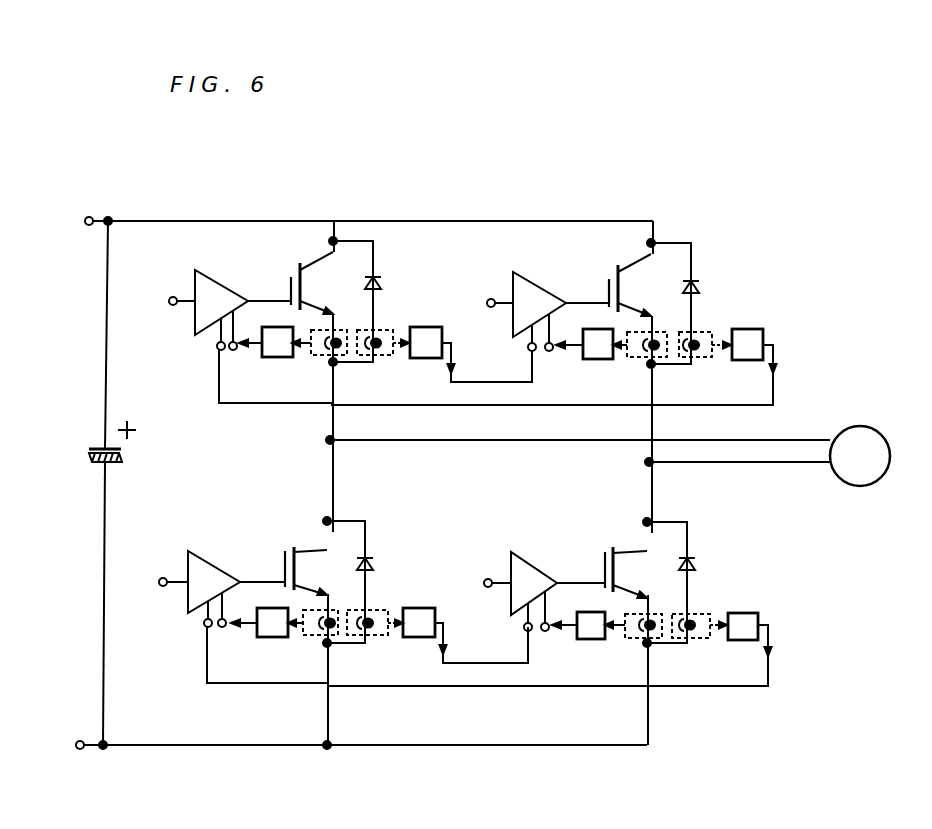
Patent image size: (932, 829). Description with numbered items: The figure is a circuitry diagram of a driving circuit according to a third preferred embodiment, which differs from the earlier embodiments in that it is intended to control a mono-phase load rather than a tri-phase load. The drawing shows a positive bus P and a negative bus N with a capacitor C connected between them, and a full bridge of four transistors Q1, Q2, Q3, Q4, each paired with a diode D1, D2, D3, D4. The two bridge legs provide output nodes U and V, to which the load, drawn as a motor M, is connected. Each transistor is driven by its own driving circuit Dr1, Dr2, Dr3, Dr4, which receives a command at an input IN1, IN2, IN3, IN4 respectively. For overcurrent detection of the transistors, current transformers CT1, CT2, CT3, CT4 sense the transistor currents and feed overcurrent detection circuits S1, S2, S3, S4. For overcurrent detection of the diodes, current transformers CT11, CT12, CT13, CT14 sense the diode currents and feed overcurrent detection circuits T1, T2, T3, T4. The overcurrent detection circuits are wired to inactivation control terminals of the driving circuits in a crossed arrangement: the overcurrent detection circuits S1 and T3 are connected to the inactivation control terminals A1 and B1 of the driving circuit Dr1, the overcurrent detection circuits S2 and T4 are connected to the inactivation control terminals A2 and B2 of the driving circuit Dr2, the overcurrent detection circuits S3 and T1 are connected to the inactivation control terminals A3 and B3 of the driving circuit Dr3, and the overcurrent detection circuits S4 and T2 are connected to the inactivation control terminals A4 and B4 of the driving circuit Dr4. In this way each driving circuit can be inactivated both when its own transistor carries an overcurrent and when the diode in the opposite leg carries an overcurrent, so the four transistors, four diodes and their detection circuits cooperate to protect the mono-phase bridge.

The positive DC bus terminal P is at (83, 224).
The negative DC bus terminal N is at (77, 746).
The DC link capacitor C is at (95, 467).
The output terminal U is at (578, 453).
The output terminal V is at (737, 475).
The motor M is at (872, 471).
The input terminal 1 IN1 is at (161, 301).
The input terminal 2 IN2 is at (153, 582).
The input terminal 3 IN3 is at (480, 302).
The input terminal 4 IN4 is at (478, 583).
The driving circuit Dr1 is at (221, 302).
The driving circuit Dr2 is at (214, 582).
The driving circuit Dr3 is at (539, 304).
The driving circuit Dr4 is at (534, 583).
The transistor Q1 is at (290, 276).
The transistor Q2 is at (283, 555).
The transistor Q3 is at (608, 280).
The transistor Q4 is at (602, 550).
The diode D1 is at (399, 265).
The diode D2 is at (390, 547).
The diode D3 is at (715, 273).
The diode D4 is at (712, 549).
The overcurrent detection circuit T1 is at (470, 331).
The overcurrent detection circuit T2 is at (461, 610).
The overcurrent detection circuit T3 is at (554, 347).
The overcurrent detection circuit T4 is at (554, 627).
The overcurrent detection circuit S1 is at (266, 382).
The overcurrent detection circuit S2 is at (259, 674).
The overcurrent detection circuit S3 is at (584, 383).
The overcurrent detection circuit S4 is at (581, 676).
The inactivation control terminal A1 is at (201, 340).
The inactivation control terminal A2 is at (193, 630).
The inactivation control terminal A3 is at (517, 342).
The inactivation control terminal A4 is at (513, 622).
The inactivation control terminal B1 is at (270, 393).
The inactivation control terminal B2 is at (264, 676).
The inactivation control terminal B3 is at (541, 394).
The inactivation control terminal B4 is at (549, 679).
The current transformer CT1 is at (302, 398).
The current transformer CT2 is at (334, 670).
The current transformer CT3 is at (632, 403).
The current transformer CT4 is at (655, 678).
The current transformer CT11 is at (397, 383).
The current transformer CT12 is at (407, 671).
The current transformer CT13 is at (713, 386).
The current transformer CT14 is at (736, 677).